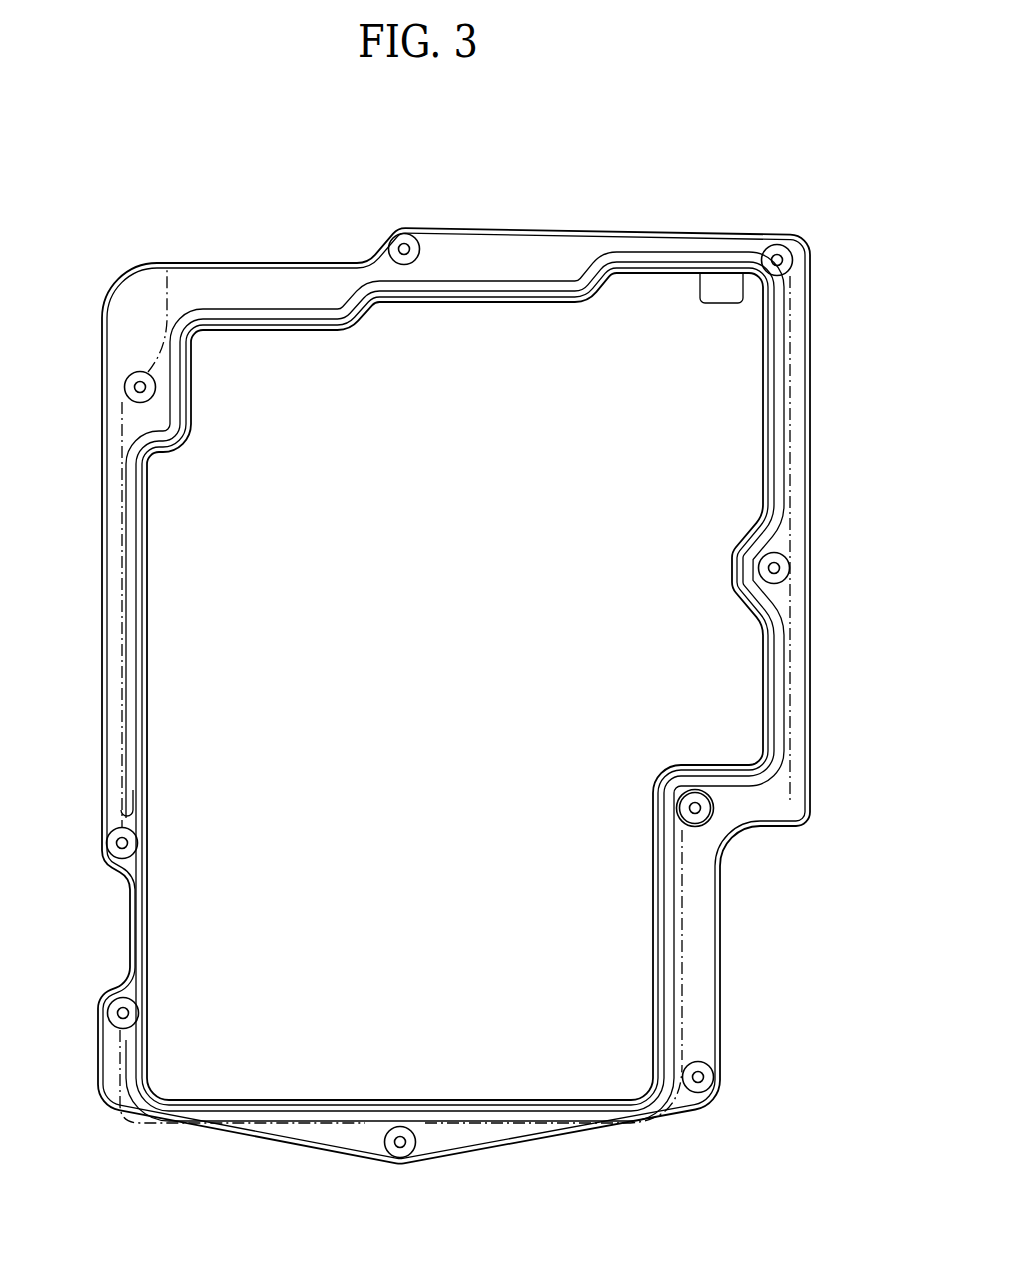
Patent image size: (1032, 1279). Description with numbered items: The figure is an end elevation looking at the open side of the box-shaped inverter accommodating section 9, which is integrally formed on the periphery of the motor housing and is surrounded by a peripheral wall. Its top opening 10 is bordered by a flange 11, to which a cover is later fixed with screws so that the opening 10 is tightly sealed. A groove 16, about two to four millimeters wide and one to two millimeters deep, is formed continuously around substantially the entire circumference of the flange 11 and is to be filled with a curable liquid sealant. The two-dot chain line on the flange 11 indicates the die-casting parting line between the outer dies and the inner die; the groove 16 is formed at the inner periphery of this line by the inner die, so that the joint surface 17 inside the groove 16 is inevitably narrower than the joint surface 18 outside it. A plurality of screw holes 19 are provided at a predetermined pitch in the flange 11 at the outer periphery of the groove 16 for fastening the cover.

The inverter accommodating section 9 is at (278, 242).
The opening 10 is at (207, 655).
The flange 11 is at (512, 255).
The groove 16 is at (130, 498).
The joint surface 17 is at (663, 949).
The joint surface 18 is at (700, 902).
The screw holes 19 is at (703, 1082).